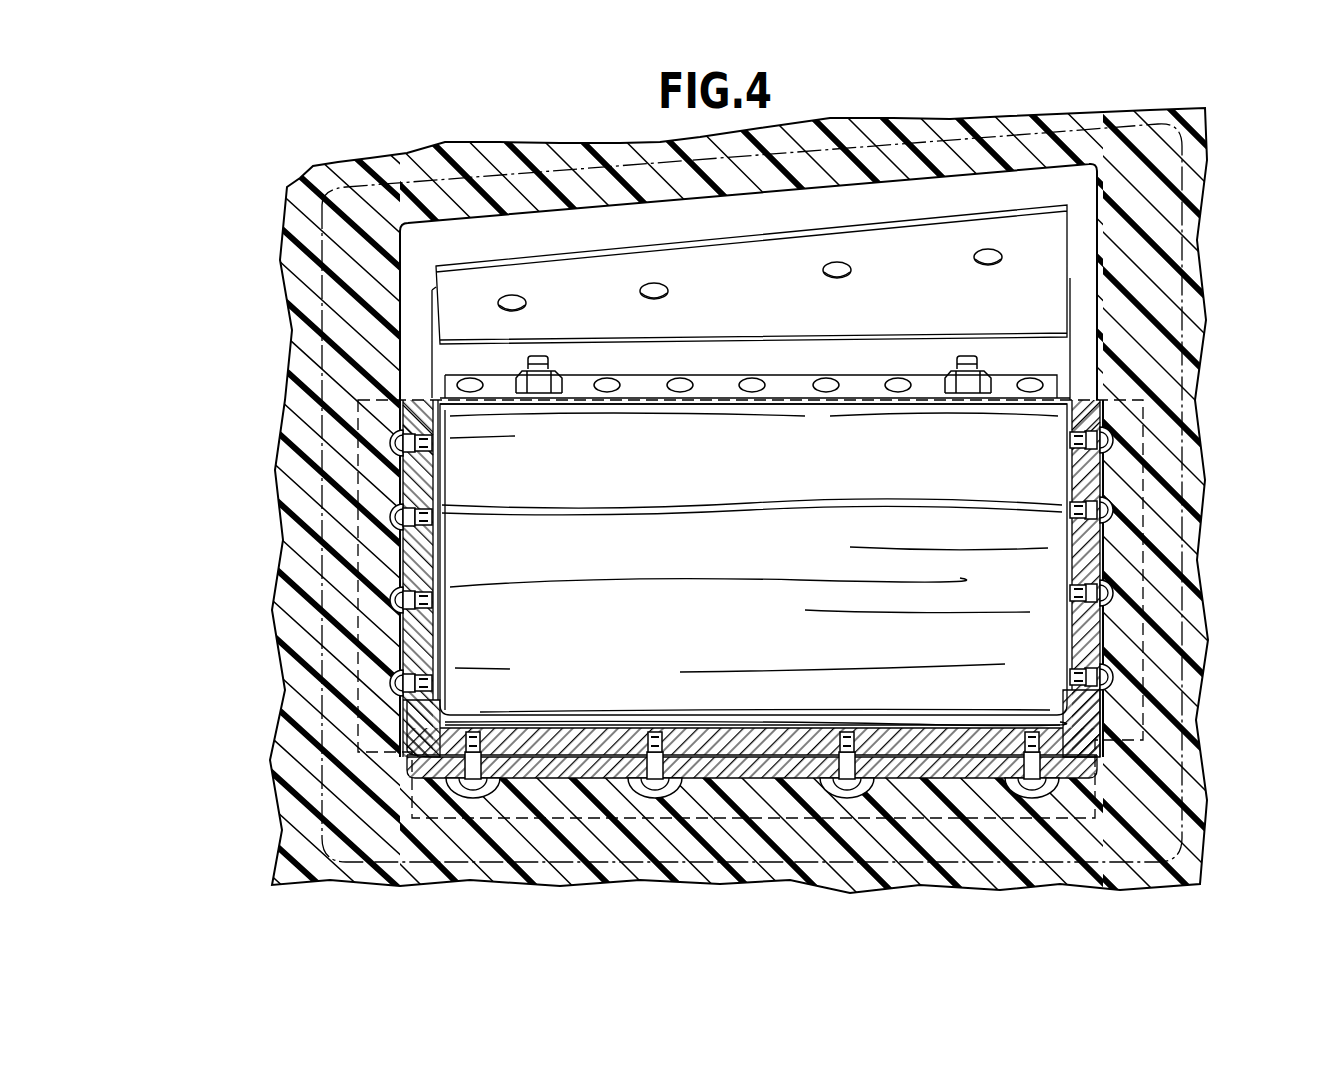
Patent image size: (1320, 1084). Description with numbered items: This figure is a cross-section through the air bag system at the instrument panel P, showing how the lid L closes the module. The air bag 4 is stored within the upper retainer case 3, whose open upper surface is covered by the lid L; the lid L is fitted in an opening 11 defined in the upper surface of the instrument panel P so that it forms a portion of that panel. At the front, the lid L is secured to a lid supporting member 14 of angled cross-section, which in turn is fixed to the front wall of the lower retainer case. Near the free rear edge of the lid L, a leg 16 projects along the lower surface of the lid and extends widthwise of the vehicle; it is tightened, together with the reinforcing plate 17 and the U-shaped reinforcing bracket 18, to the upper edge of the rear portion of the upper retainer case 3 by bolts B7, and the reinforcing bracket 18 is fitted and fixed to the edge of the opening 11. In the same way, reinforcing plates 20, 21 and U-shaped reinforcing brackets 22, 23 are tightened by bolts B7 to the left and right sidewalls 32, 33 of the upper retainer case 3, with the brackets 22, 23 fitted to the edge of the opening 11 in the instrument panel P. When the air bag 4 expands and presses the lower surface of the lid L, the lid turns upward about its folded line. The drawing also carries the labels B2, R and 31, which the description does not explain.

The lid supporting member 14 is at (724, 246).
The nut and bolt B2 is at (540, 355).
The holes R is at (612, 383).
The opening 11 is at (398, 363).
The lid L is at (1183, 407).
The instrument panel P is at (857, 896).
The air bag 4 is at (754, 571).
The left sidewall 32 is at (425, 477).
The right sidewall 33 is at (1078, 458).
The bolts B7 is at (433, 522).
The reinforcing plate 20 is at (435, 580).
The reinforcing bracket 22 is at (412, 618).
The reinforcing plate 21 is at (1072, 537).
The reinforcing bracket 23 is at (1073, 568).
The leg 16 is at (514, 755).
The upper retainer case 3 is at (556, 740).
The reinforcing plate 17 is at (752, 724).
The right corner piece 31 is at (887, 730).
The reinforcing bracket 18 is at (757, 774).